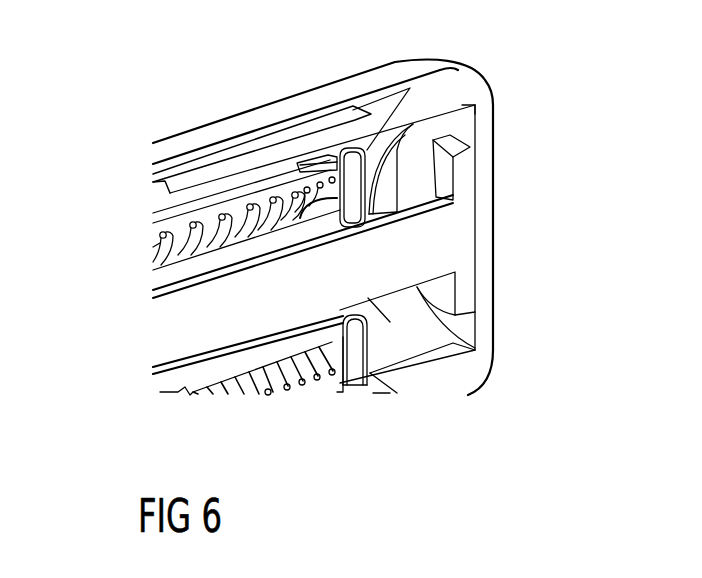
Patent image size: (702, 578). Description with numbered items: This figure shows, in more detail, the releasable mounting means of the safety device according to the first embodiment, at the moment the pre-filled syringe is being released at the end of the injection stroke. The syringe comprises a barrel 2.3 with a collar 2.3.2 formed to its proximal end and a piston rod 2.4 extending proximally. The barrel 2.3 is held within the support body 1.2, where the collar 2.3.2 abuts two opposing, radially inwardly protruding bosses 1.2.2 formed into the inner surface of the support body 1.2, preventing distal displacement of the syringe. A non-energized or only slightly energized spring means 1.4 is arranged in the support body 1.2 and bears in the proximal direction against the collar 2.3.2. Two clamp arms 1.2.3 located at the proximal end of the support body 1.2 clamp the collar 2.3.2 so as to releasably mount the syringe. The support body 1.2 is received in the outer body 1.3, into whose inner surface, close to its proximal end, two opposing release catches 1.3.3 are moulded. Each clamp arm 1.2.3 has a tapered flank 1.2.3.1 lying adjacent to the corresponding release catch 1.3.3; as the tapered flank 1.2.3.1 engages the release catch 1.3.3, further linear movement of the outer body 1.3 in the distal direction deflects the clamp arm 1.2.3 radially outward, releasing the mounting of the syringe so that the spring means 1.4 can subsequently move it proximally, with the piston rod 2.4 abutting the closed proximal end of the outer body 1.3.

The support body 1.2 is at (160, 202).
The bosses 1.2.2 is at (313, 165).
The clamp arm 1.2.3 is at (372, 133).
The tapered flank 1.2.3.1 is at (383, 143).
The outer body 1.3 is at (187, 147).
The release catch 1.3.3 is at (410, 112).
The spring means 1.4 is at (157, 245).
The barrel 2.3 is at (163, 380).
The collar 2.3.2 is at (355, 377).
The piston rod 2.4 is at (167, 320).